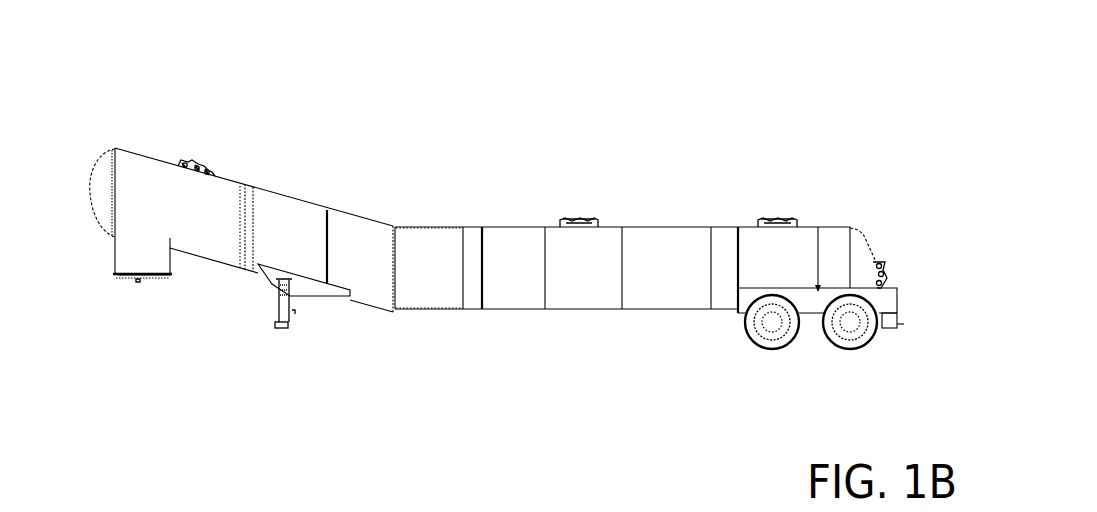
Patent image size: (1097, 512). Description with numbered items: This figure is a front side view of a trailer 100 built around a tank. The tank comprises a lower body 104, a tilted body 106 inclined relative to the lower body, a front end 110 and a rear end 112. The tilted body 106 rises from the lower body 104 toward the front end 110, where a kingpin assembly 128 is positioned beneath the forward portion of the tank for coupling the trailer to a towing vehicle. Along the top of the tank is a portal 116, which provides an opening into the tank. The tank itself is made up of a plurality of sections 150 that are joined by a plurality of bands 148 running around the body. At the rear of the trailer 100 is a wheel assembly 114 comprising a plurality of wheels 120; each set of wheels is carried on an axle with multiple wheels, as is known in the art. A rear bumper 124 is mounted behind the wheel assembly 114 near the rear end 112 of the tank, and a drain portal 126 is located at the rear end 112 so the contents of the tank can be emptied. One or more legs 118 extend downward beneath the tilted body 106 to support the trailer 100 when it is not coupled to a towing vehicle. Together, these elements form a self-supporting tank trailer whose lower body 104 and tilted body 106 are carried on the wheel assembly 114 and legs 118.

The trailer 100 is at (647, 96).
The lower body 104 is at (748, 253).
The tilted body 106 is at (238, 243).
The front end 110 is at (97, 187).
The rear end 112 is at (860, 260).
The wheel assembly 114 is at (727, 315).
The portal 116 is at (198, 168).
The legs 118 is at (284, 327).
The plurality of wheels 120 is at (740, 340).
The rear bumper 124 is at (889, 332).
The drain portal 126 is at (884, 275).
The kingpin assembly 128 is at (138, 279).
The bands 148 is at (331, 204).
The sections 150 is at (423, 243).